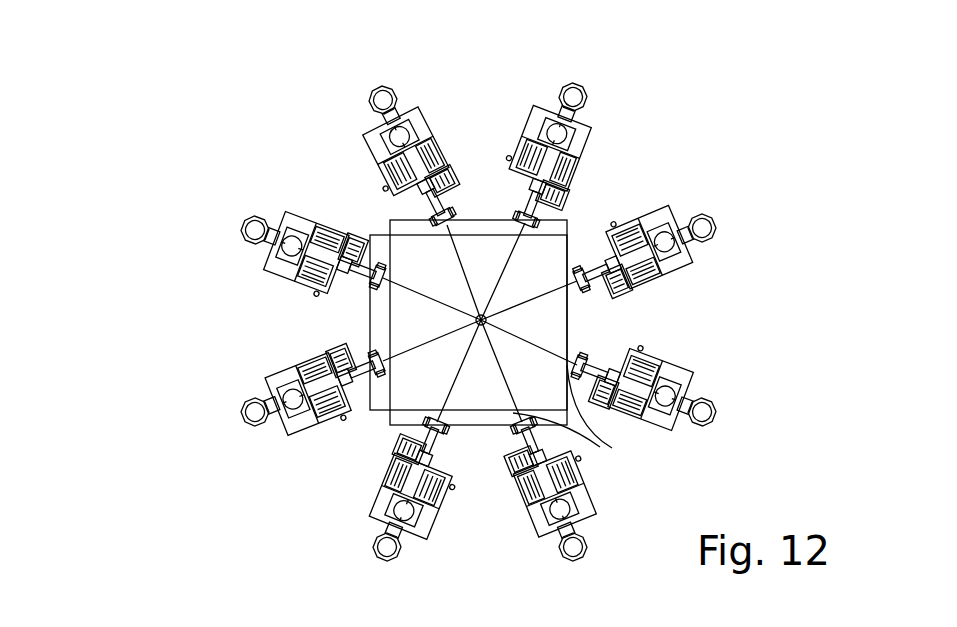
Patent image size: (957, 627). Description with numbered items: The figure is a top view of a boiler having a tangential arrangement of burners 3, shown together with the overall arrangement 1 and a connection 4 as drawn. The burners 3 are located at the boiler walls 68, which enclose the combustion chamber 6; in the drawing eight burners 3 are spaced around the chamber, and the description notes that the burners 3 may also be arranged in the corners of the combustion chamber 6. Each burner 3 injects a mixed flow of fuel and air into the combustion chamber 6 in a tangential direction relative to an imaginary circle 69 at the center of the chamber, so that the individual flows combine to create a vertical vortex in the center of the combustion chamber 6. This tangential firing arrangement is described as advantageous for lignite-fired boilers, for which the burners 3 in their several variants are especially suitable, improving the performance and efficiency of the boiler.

The vibration isolation system 1 is at (250, 93).
The burner 3 is at (304, 184).
The connection line 4 is at (572, 418).
The combustion chamber 6 is at (543, 280).
The boiler wall 68 is at (492, 208).
The imaginary circle 69 is at (481, 332).